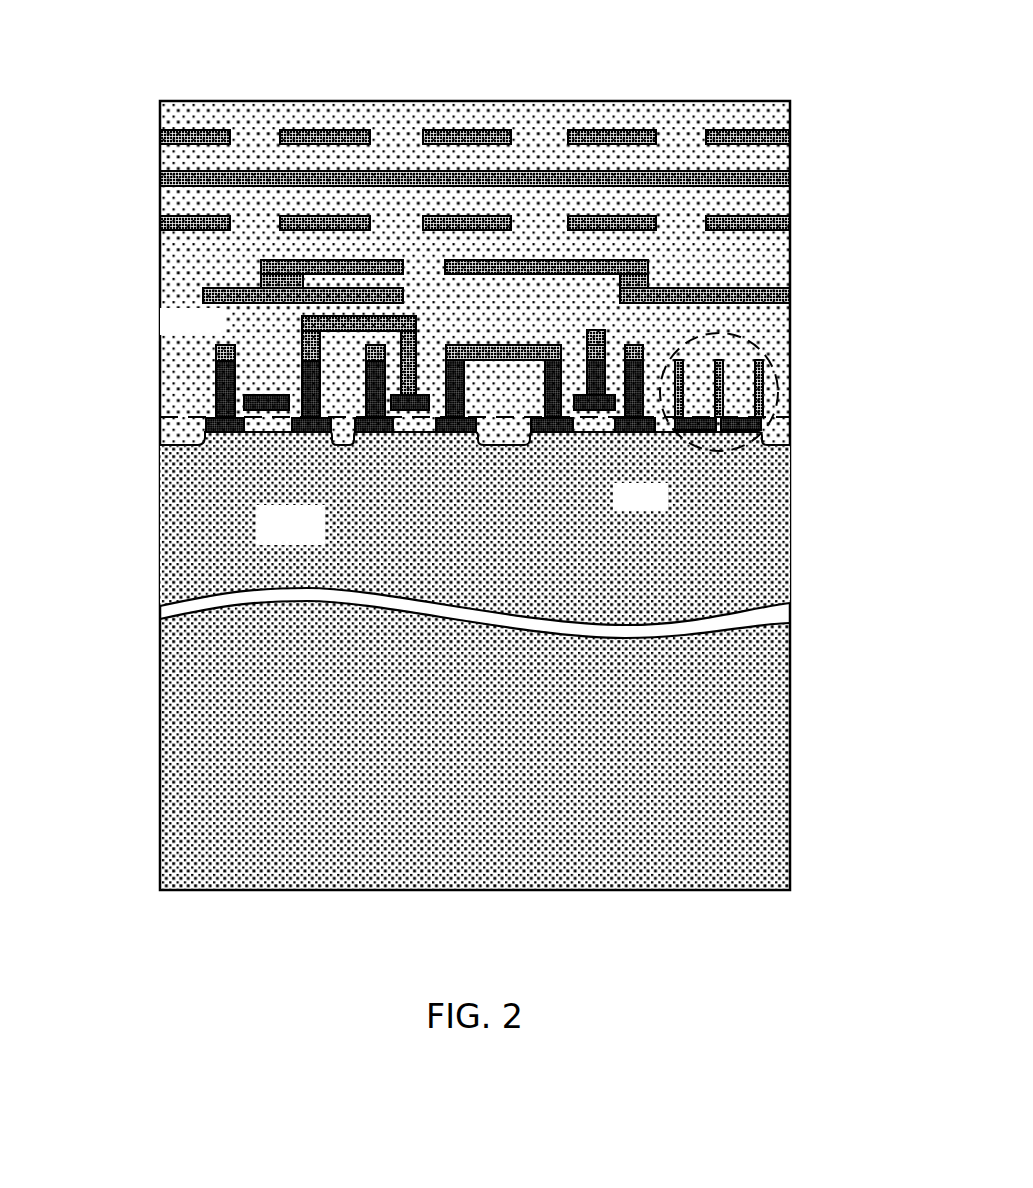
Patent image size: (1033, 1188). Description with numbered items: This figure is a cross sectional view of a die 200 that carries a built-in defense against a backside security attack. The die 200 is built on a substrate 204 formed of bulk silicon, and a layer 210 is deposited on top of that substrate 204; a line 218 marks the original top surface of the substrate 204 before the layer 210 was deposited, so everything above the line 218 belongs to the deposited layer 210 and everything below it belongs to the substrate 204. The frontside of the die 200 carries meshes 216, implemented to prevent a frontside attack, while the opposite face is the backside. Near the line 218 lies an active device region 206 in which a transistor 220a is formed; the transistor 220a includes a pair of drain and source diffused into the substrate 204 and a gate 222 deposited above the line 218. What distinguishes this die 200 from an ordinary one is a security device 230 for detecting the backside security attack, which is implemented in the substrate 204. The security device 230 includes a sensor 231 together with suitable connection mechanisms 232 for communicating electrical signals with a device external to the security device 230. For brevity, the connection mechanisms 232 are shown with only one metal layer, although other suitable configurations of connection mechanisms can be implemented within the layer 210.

The die 200 is at (80, 26).
The substrate 204 is at (137, 417).
The active device region 206 is at (120, 385).
The layer 210 is at (137, 93).
The meshes 216 is at (753, 122).
The line 218 is at (777, 407).
The transistor 220a is at (207, 364).
The gate 222 is at (257, 395).
The security device 230 is at (672, 444).
The sensor 231 is at (742, 424).
The connection mechanisms 232 is at (760, 350).